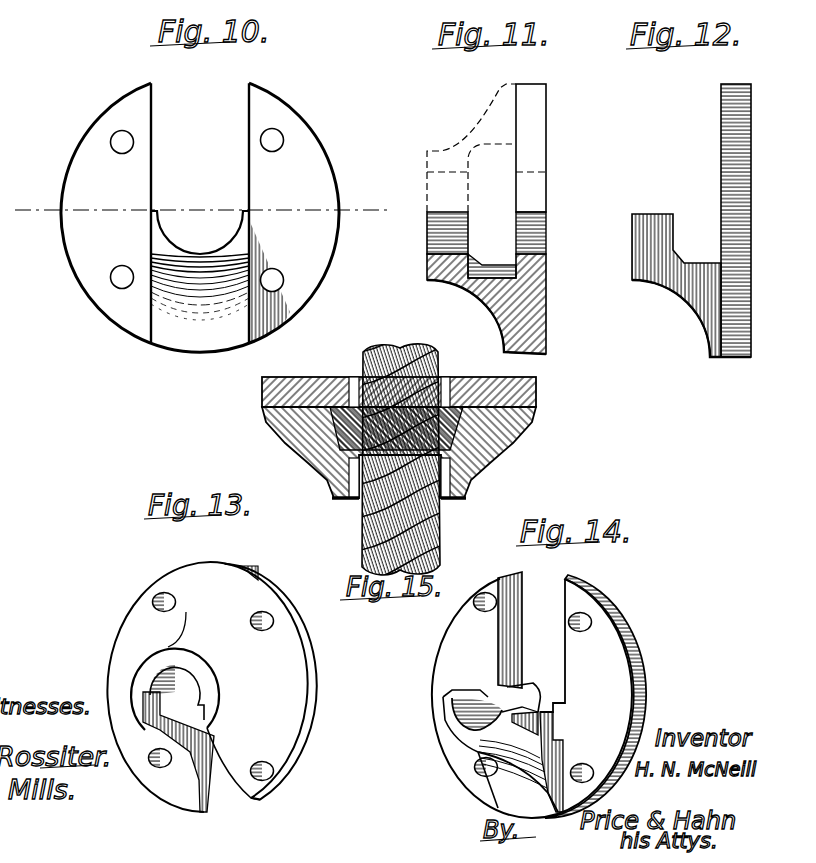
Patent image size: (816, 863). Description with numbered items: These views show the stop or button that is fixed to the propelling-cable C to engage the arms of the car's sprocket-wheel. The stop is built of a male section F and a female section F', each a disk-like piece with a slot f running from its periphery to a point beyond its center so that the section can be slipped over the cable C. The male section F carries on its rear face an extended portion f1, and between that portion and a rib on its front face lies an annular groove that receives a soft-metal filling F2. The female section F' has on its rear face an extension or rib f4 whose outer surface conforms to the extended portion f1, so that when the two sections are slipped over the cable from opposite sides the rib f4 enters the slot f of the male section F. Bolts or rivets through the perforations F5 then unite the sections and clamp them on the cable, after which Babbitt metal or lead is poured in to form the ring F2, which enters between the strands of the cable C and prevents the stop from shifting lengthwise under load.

In FIG. 10, the female section F' is at (202, 217).
In FIG. 12, the female section F' is at (715, 220).
In FIG. 14, the female section F' is at (539, 696).
In FIG. 10, the slot f is at (200, 213).
In FIG. 13, the slot f is at (201, 752).
In FIG. 14, the slot f is at (531, 685).
In FIG. 10, the extension or rib f4 is at (212, 240).
In FIG. 11, the extension or rib f4 is at (428, 264).
In FIG. 12, the extension or rib f4 is at (641, 239).
In FIG. 14, the extension or rib f4 is at (458, 723).
In FIG. 11, the male section F is at (502, 219).
In FIG. 13, the male section F is at (214, 687).
In FIG. 13, the perforations F5 is at (158, 598).
In FIG. 13, the extended portion f1 is at (207, 688).
In FIG. 15, the soft-metal filling F2 is at (468, 443).
In FIG. 15, the propelling-cable C is at (400, 444).